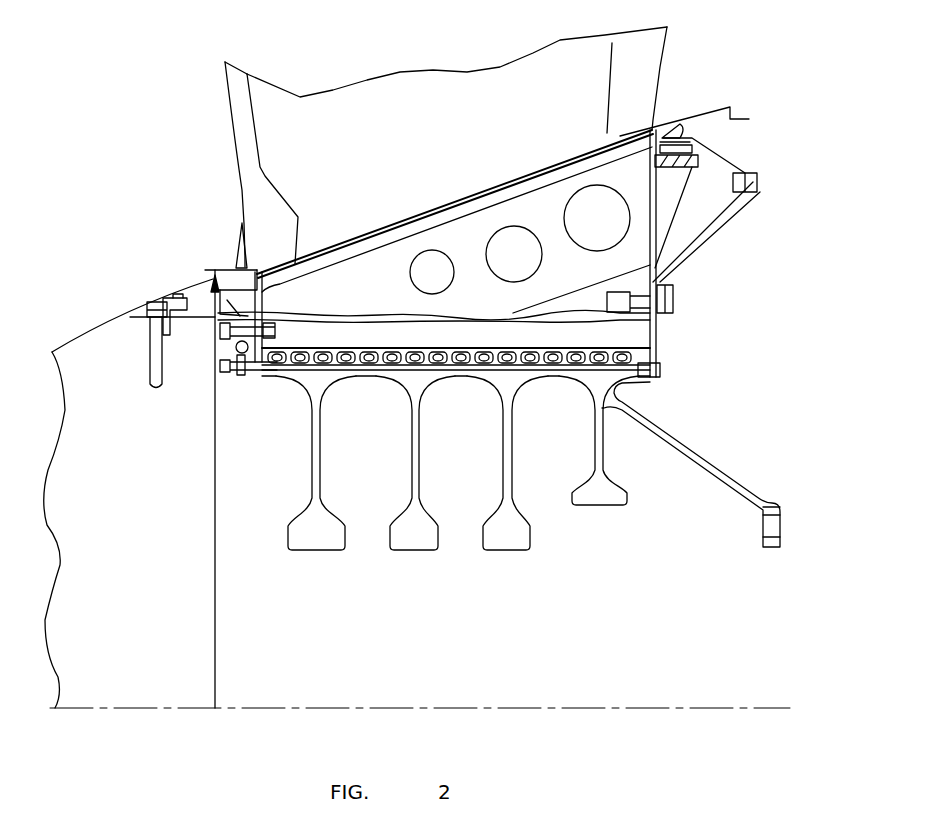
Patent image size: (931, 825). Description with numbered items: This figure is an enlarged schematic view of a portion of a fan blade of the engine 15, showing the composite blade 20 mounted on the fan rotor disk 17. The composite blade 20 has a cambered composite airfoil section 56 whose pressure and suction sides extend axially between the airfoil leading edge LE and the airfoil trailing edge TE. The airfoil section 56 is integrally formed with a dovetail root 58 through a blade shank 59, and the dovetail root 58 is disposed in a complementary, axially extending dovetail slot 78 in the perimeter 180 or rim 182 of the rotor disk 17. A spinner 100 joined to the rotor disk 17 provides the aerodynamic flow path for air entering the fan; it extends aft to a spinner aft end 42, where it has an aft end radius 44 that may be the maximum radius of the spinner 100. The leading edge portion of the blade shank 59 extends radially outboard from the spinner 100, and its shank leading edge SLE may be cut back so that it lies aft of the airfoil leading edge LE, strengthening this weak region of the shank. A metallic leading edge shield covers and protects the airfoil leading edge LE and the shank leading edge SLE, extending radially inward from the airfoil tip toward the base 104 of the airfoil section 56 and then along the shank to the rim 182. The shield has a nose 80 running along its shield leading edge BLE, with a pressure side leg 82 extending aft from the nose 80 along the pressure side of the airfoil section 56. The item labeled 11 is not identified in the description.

The engine centerline axis 11 is at (390, 708).
The engine 15 is at (198, 472).
The fan rotor disk 17 is at (533, 350).
The composite blade 20 is at (560, 40).
The spinner aft end 42 is at (240, 222).
The aft end radius 44 is at (217, 603).
The composite airfoil section 56 is at (400, 72).
The dovetail root 58 is at (400, 332).
The blade shank 59 is at (450, 237).
The dovetail slot 78 is at (548, 200).
The nose 80 is at (660, 350).
The pressure side leg 82 is at (664, 133).
The spinner 100 is at (86, 336).
The base 104 is at (377, 232).
The perimeter 180 is at (347, 350).
The rim 182 is at (460, 355).
The shield leading edge BLE is at (224, 88).
The airfoil leading edge LE is at (248, 108).
The shank leading edge SLE is at (297, 228).
The airfoil trailing edge TE is at (660, 68).